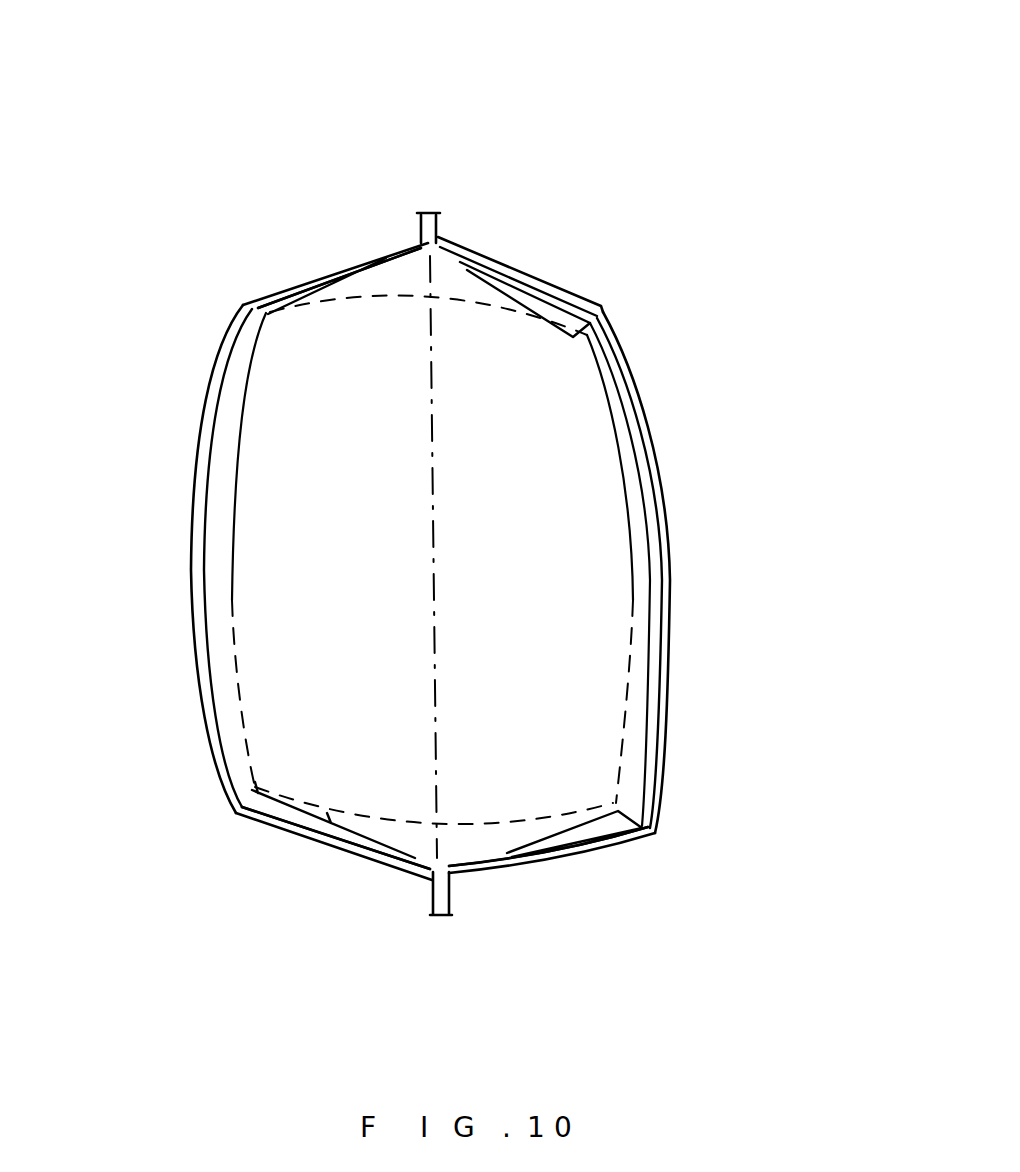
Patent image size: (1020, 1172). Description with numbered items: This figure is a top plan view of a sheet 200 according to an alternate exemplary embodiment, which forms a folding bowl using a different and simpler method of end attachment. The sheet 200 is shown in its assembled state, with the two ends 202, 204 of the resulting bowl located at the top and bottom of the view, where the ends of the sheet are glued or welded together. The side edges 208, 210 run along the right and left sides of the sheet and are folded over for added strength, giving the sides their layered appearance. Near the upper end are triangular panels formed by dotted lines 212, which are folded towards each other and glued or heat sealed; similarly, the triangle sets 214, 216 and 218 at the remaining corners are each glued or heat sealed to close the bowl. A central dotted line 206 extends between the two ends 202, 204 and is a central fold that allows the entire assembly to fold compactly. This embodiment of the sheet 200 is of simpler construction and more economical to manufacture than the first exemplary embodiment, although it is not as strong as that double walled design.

The sheet 200 is at (643, 131).
The end 202 is at (445, 221).
The end 204 is at (453, 922).
The central dotted line 206 is at (435, 575).
The side edge 208 is at (657, 623).
The side edge 210 is at (190, 572).
The dotted lines 212 is at (323, 290).
The triangle set 214 is at (537, 305).
The triangle set 216 is at (330, 817).
The triangle set 218 is at (630, 848).